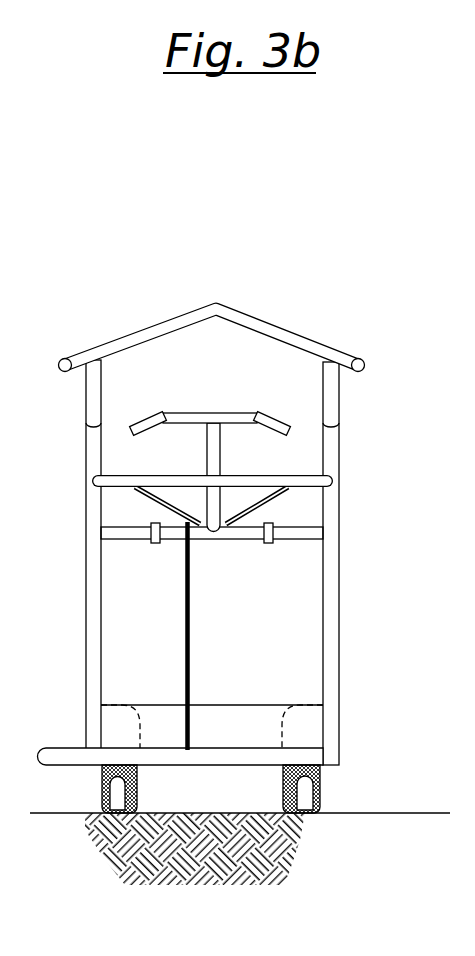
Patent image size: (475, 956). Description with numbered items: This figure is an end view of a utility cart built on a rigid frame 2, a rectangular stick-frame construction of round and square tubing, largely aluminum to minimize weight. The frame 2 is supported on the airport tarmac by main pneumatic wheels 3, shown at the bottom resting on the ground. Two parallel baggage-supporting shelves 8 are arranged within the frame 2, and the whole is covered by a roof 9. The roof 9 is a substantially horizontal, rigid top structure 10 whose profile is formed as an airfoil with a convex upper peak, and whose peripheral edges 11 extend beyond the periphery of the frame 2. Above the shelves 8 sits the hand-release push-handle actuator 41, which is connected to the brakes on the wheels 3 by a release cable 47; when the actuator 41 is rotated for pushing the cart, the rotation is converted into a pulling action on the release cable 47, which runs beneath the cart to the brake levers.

The top structure 10 is at (0, 274).
The frame 2 is at (340, 629).
The main pneumatic wheels 3 is at (137, 799).
The baggage-supporting shelves 8 is at (122, 527).
The roof 9 is at (246, 332).
The peripheral edges 11 is at (62, 369).
The push-handle actuator 41 is at (197, 417).
The release cable 47 is at (190, 652).